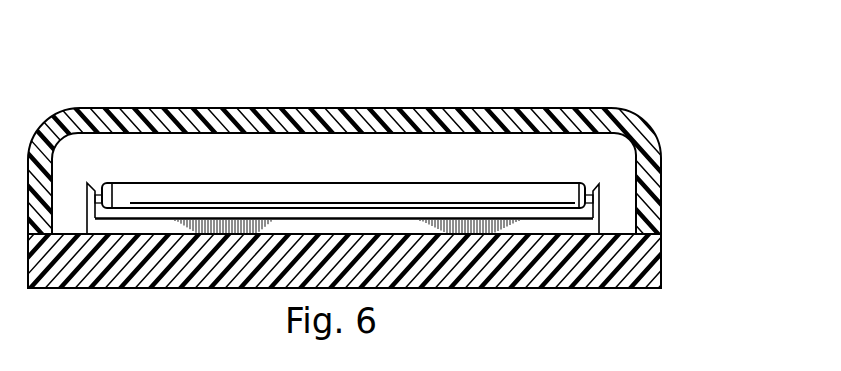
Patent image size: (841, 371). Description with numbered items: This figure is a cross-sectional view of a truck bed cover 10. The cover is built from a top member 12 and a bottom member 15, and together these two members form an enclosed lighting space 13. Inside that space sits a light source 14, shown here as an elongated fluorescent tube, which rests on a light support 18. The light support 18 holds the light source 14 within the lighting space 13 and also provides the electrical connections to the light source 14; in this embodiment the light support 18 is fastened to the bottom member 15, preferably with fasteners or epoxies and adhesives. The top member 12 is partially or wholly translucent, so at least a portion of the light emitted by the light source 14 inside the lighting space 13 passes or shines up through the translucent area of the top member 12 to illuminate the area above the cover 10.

The truck bed cover 10 is at (278, 90).
The top member 12 is at (157, 108).
The lighting space 13 is at (597, 157).
The light source 14 is at (487, 184).
The bottom member 15 is at (130, 277).
The light support 18 is at (583, 230).